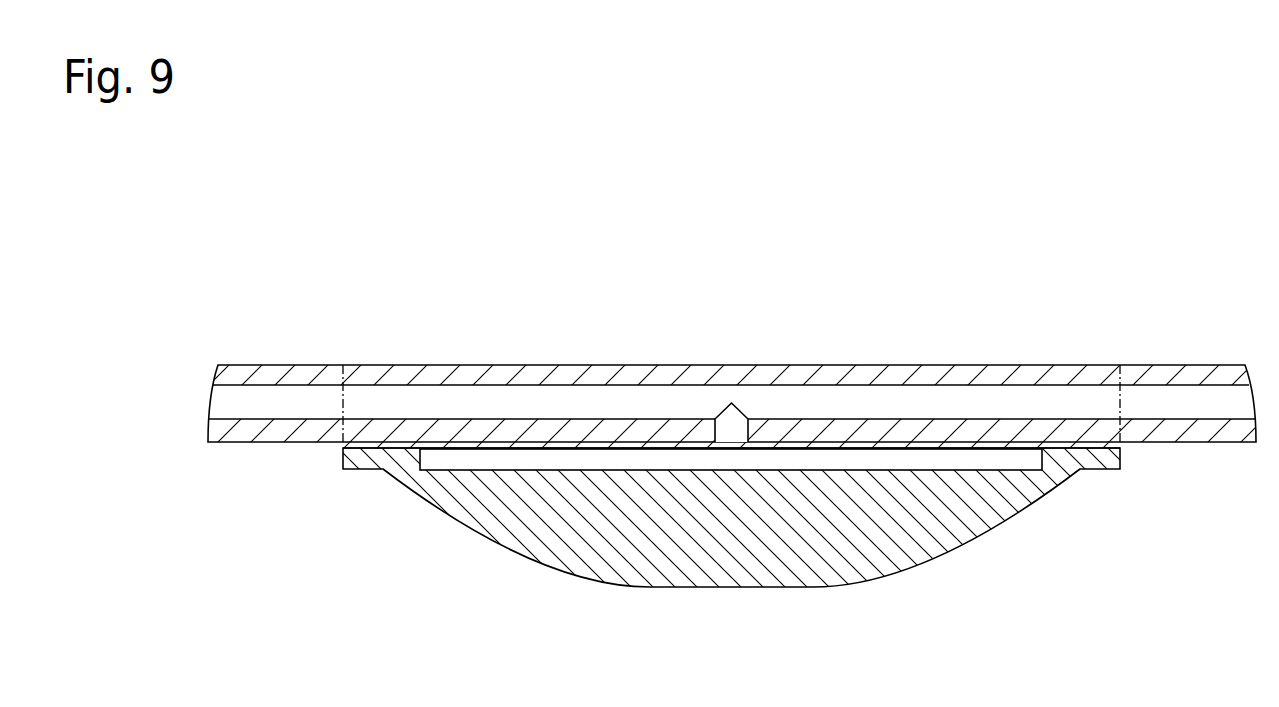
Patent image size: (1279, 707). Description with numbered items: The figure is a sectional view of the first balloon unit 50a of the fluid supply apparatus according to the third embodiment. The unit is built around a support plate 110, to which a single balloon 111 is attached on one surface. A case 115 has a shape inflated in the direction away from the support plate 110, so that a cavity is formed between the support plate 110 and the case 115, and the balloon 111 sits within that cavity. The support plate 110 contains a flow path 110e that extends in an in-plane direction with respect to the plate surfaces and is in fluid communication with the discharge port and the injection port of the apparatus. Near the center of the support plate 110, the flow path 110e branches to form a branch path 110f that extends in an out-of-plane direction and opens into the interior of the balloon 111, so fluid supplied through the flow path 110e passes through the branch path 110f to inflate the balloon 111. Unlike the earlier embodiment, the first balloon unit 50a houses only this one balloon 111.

The first balloon unit 50a is at (1073, 331).
The support plate 110 is at (650, 365).
The flow path 110e is at (395, 387).
The branch path 110f is at (745, 420).
The case 115 is at (744, 580).
The first balloon 111 is at (788, 455).